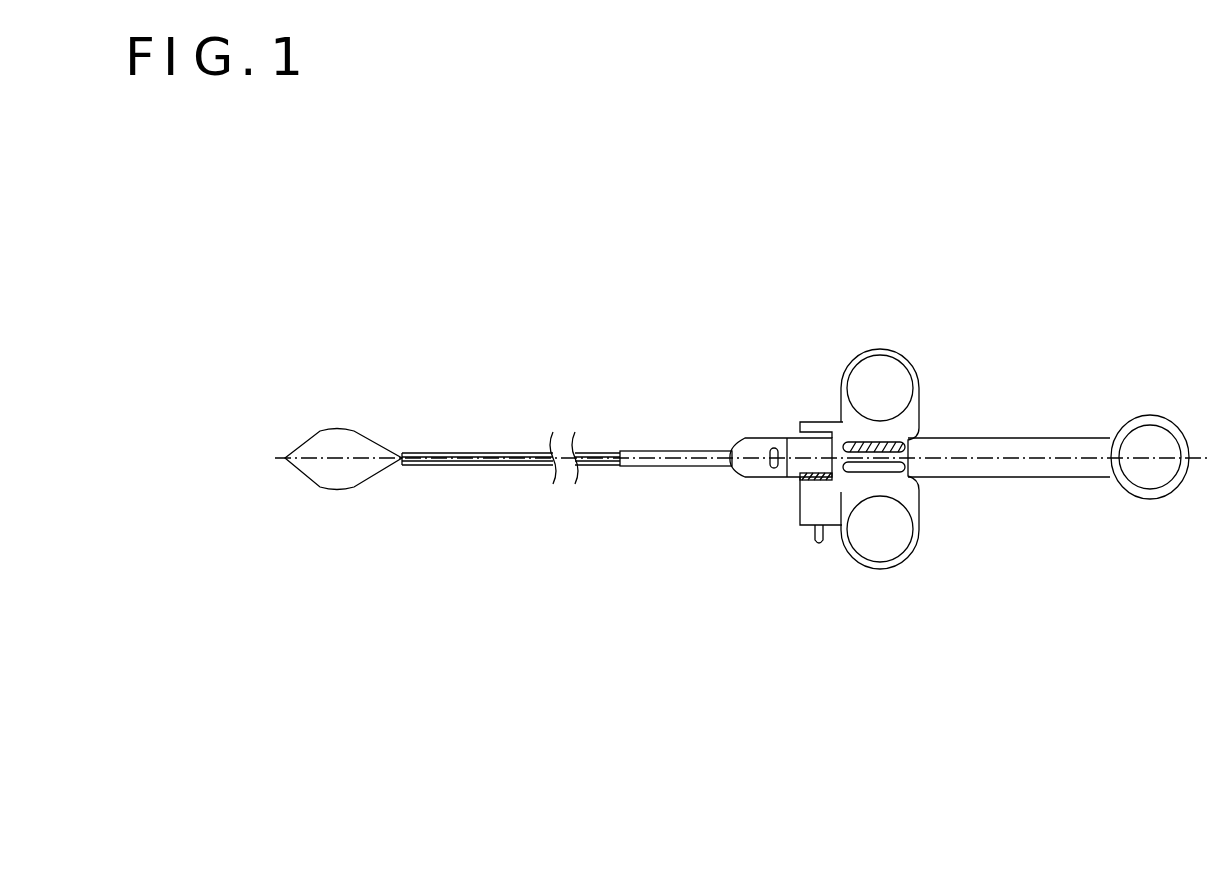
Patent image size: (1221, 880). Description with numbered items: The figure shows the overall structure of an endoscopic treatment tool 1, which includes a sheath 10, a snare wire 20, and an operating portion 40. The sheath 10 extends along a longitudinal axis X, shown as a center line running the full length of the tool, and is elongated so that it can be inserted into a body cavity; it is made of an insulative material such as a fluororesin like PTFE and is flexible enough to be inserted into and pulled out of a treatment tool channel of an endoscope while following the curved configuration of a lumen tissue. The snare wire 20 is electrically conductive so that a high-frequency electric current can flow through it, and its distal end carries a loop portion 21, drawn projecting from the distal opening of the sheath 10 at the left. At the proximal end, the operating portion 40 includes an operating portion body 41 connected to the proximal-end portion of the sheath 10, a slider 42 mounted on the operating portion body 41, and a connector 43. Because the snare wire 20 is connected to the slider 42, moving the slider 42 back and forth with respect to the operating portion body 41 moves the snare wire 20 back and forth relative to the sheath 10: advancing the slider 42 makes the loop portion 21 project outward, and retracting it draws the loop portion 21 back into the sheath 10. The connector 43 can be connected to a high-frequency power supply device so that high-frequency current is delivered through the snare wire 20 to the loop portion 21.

The endoscopic treatment tool 1 is at (882, 292).
The sheath 10 is at (525, 450).
The snare wire 20 is at (452, 378).
The loop portion 21 is at (375, 435).
The operating portion 40 is at (919, 346).
The operating portion body 41 is at (1004, 478).
The slider 42 is at (870, 569).
The connector 43 is at (818, 546).
The longitudinal axis X is at (591, 468).